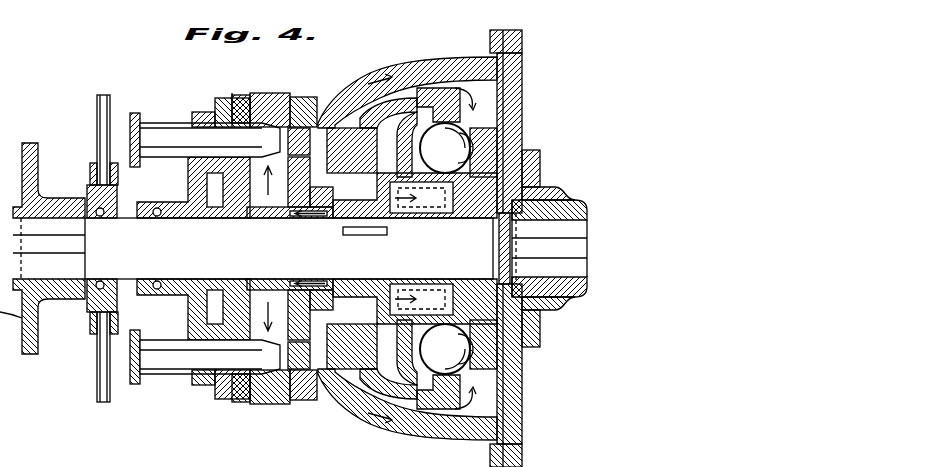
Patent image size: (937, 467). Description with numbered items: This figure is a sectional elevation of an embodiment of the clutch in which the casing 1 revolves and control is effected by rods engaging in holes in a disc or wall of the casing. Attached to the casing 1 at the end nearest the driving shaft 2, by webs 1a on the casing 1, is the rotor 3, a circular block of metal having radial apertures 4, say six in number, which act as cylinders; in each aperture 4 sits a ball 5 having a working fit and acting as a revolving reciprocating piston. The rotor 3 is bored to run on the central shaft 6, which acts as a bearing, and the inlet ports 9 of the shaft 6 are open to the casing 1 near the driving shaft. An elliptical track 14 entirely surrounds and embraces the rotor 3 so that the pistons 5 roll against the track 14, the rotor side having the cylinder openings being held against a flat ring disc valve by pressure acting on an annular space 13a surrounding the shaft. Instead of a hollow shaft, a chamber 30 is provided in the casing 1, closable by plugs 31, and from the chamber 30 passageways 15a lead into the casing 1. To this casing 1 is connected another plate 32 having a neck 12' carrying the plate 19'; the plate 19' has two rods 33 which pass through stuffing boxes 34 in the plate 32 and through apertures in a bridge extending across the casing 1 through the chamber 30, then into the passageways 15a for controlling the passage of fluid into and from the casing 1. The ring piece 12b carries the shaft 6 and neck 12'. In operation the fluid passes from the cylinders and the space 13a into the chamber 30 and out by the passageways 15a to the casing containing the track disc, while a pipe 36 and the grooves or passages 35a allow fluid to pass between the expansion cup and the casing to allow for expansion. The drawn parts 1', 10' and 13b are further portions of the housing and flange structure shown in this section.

The casing 1 is at (524, 248).
The webs 1a is at (500, 143).
The housing part 1' is at (251, 262).
The driving shaft 2 is at (582, 214).
The rotor 3 is at (548, 191).
The radial apertures 4 is at (541, 170).
The ball 5 is at (443, 56).
The central shaft 6 is at (388, 162).
The inlet ports 9 is at (236, 46).
The lower flange 10' is at (558, 309).
The neck 12' is at (193, 248).
The ring piece 12b is at (92, 300).
The annular space 13a is at (340, 279).
The housing plate 13b is at (383, 232).
The elliptical track 14 is at (443, 98).
The passageways 15a is at (328, 106).
The plate 19' is at (110, 251).
The chamber 30 is at (302, 97).
The plugs 31 is at (268, 93).
The plate 32 is at (224, 99).
The rods 33 is at (152, 135).
The stuffing boxes 34 is at (203, 112).
The grooves or passages 35a is at (173, 278).
The pipe 36 is at (98, 113).